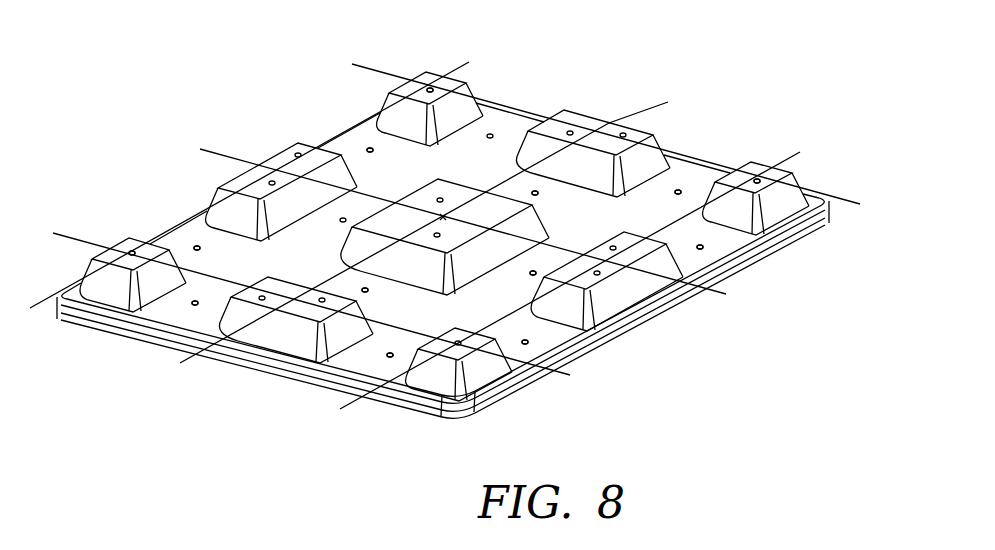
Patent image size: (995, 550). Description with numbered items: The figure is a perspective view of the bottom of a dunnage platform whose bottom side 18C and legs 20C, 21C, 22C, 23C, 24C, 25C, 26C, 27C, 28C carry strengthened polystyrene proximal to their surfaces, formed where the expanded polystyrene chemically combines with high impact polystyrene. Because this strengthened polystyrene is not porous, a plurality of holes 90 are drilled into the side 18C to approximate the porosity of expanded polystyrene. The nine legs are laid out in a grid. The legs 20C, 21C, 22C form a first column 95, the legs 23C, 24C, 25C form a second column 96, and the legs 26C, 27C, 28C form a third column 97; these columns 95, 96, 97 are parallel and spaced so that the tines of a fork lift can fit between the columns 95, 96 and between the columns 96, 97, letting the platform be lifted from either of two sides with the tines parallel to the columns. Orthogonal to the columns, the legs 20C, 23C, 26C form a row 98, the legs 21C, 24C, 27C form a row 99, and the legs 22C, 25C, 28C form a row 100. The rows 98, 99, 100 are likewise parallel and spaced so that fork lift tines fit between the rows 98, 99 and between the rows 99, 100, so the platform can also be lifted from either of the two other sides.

The side 18C is at (318, 267).
The holes 90 is at (133, 252).
The column 95 is at (513, 25).
The column 96 is at (680, 74).
The column 97 is at (842, 117).
The row 98 is at (568, 378).
The row 99 is at (722, 297).
The row 100 is at (853, 246).
The leg 20C is at (122, 238).
The leg 21C is at (305, 140).
The leg 22C is at (440, 70).
The leg 23C is at (292, 350).
The leg 24C is at (462, 195).
The leg 25C is at (572, 126).
The leg 26C is at (450, 365).
The leg 27C is at (595, 284).
The leg 28C is at (748, 170).